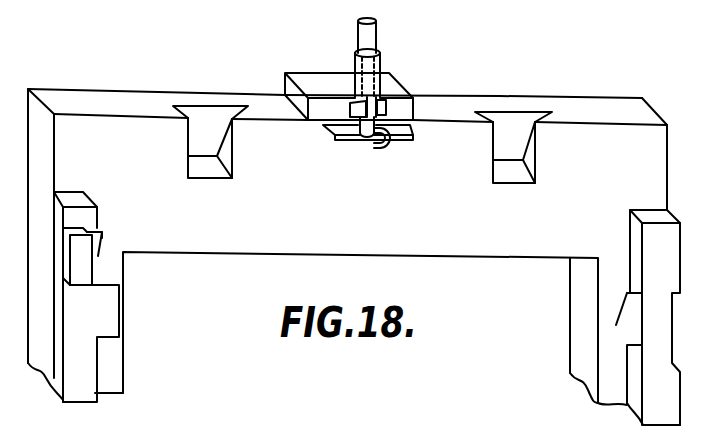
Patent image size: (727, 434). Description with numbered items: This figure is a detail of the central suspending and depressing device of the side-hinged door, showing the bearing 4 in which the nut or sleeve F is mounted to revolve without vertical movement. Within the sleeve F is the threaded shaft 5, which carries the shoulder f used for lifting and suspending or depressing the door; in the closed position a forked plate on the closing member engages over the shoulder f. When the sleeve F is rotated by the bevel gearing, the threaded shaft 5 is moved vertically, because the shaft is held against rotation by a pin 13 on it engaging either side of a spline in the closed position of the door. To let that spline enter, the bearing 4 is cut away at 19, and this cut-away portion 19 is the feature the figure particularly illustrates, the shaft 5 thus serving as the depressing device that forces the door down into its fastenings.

The threaded shaft 5 is at (362, 33).
The nut or sleeve F is at (379, 80).
The cut-away of bearing 19 is at (373, 102).
The bearing 4 is at (386, 107).
The pin 13 is at (379, 144).
The shoulder f is at (400, 142).
The guide slots and blocks i is at (173, 106).